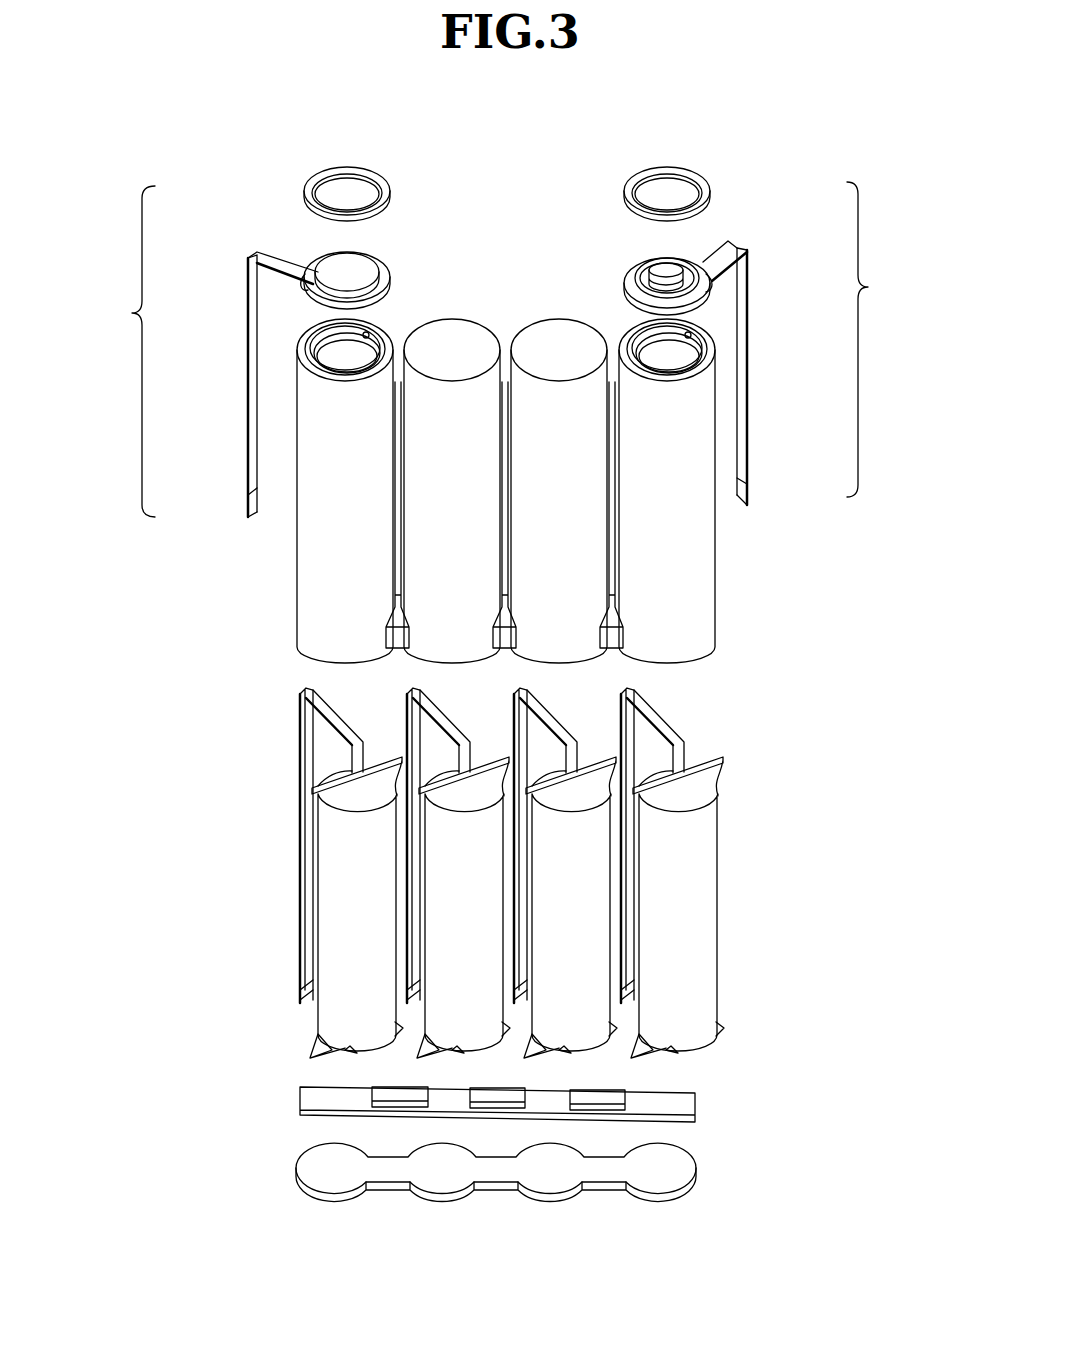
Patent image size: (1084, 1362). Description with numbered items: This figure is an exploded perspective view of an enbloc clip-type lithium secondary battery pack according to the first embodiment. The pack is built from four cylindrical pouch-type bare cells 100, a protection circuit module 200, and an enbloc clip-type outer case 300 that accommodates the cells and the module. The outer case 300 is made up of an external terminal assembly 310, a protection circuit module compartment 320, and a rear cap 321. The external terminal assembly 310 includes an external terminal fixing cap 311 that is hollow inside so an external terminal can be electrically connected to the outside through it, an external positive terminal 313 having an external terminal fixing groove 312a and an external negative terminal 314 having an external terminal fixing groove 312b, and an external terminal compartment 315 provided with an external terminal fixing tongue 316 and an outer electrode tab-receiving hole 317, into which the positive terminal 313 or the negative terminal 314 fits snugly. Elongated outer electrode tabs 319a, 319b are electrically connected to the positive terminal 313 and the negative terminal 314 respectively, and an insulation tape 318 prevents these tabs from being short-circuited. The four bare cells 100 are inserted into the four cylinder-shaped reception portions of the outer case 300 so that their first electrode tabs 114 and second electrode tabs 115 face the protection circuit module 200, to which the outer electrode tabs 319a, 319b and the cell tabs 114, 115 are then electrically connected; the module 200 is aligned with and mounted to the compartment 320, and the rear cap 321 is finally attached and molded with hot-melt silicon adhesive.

The cylindrical pouch-type bare cell 100 is at (337, 915).
The first electrode tab 114 is at (340, 1053).
The second electrode tab 115 is at (300, 997).
The protection circuit module 200 is at (708, 1114).
The enbloc clip-type outer case 300 is at (289, 622).
The external terminal assembly 310 is at (500, 349).
The external terminal fixing cap 311 is at (295, 192).
The external terminal fixing groove 312a is at (709, 283).
The external terminal fixing groove 312b is at (387, 281).
The external positive terminal 313 is at (697, 251).
The external negative terminal 314 is at (319, 249).
The external terminal compartment 315 is at (314, 344).
The external terminal fixing tongue 316 is at (364, 333).
The outer electrode tab-receiving hole 317 is at (332, 358).
The insulation tape 318 is at (251, 468).
The outer electrode tab 319a is at (743, 490).
The outer electrode tab 319b is at (249, 503).
The protection circuit module compartment 320 is at (613, 640).
The rear cap 321 is at (708, 1171).